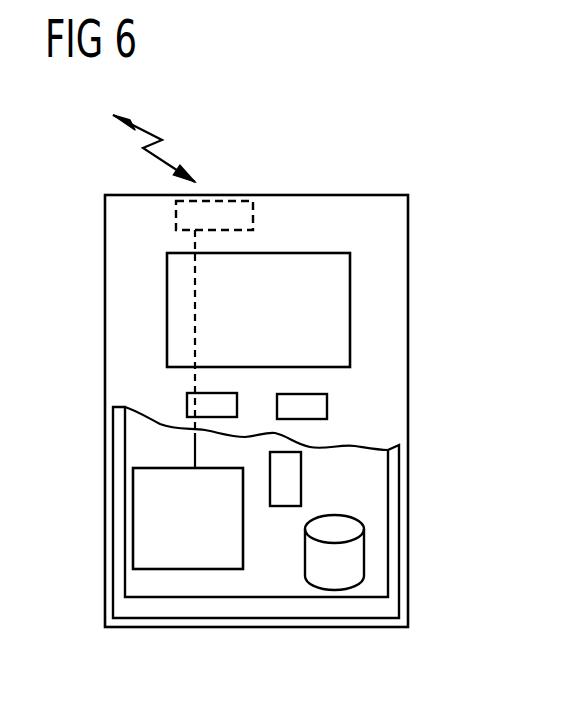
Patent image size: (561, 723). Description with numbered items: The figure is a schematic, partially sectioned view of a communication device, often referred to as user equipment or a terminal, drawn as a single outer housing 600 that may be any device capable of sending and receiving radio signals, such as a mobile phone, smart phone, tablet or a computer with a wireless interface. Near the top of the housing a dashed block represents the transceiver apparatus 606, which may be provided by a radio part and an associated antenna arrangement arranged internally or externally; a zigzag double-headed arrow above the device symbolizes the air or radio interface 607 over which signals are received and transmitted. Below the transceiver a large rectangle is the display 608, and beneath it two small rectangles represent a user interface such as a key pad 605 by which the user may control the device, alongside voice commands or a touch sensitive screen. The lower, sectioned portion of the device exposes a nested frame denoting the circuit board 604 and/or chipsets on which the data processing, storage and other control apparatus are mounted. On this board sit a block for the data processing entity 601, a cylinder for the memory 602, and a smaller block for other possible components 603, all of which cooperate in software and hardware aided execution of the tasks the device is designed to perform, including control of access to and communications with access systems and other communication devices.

The device 600 is at (327, 195).
The data processing entity 601 is at (133, 517).
The memory 602 is at (364, 555).
The other possible components 603 is at (301, 468).
The circuit board 604 is at (133, 585).
The key pad 605 is at (187, 405).
The transceiver apparatus 606 is at (253, 218).
The air or radio interface 607 is at (148, 137).
The display 608 is at (168, 310).